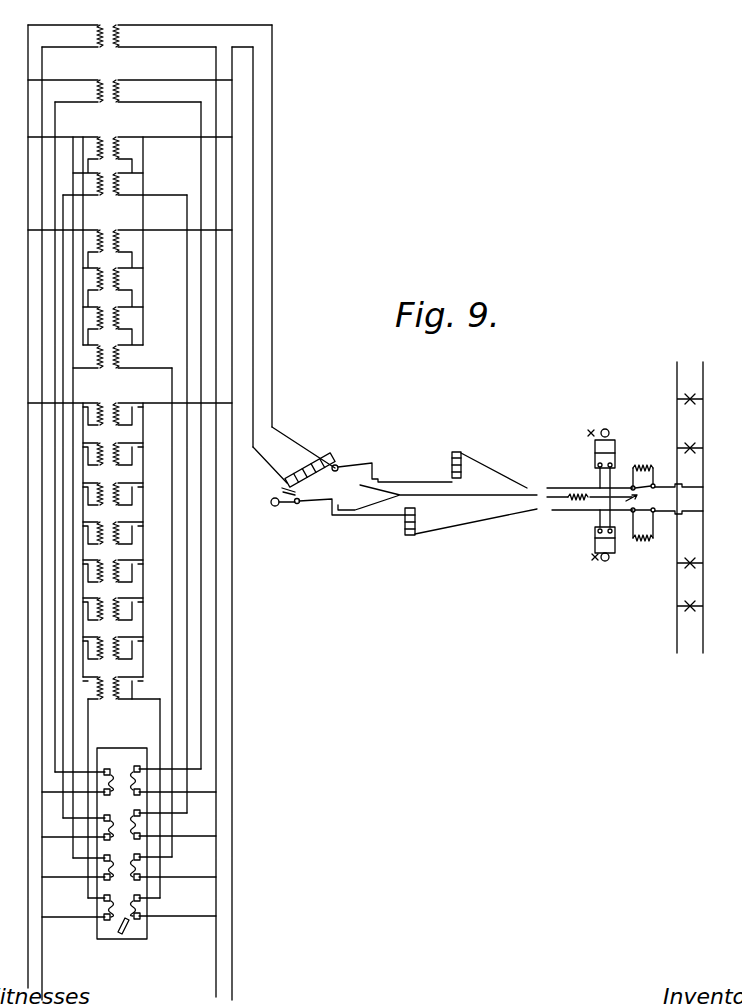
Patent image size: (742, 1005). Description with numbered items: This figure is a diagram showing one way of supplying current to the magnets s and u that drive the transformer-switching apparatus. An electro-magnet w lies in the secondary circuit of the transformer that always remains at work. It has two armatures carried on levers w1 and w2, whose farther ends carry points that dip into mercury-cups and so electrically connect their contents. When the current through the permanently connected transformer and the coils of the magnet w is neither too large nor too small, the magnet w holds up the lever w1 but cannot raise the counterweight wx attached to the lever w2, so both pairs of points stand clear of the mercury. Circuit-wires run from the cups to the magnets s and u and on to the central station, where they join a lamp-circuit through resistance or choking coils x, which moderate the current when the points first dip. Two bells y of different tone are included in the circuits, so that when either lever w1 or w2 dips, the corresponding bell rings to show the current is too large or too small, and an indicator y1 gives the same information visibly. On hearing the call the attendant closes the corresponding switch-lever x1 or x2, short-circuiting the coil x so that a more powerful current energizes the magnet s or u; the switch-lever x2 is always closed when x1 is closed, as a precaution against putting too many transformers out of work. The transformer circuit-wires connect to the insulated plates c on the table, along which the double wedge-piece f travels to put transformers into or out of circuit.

The electro-magnet w is at (310, 474).
The lever w1 is at (395, 462).
The counterweight wx is at (285, 508).
The lever w2 is at (418, 498).
The magnet u is at (489, 470).
The magnet s is at (471, 519).
The bell y is at (596, 495).
The indicator y1 is at (589, 505).
The resistance or choking coil x is at (643, 503).
The switch-lever x1 is at (643, 482).
The switch-lever x2 is at (643, 517).
The insulated plate c is at (122, 843).
The double wedge-piece f is at (118, 932).